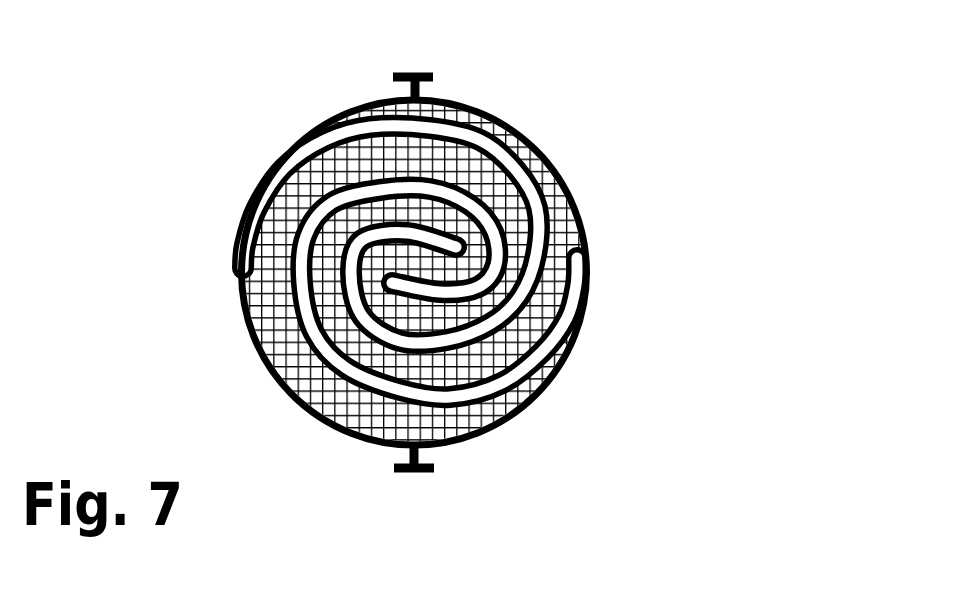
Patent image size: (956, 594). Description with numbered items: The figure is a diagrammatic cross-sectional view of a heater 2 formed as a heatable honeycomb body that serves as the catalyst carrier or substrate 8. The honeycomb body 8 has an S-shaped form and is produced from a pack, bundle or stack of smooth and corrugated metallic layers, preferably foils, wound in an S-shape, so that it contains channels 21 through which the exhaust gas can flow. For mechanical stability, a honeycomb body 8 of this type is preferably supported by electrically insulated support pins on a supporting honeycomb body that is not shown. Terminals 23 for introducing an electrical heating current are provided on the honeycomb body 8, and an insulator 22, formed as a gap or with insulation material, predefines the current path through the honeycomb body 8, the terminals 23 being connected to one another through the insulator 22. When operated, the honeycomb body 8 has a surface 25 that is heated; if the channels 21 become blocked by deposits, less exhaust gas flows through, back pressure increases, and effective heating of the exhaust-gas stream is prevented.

The heater 2 is at (217, 138).
The honeycomb body 8 is at (565, 237).
The channels 21 is at (568, 212).
The insulator 22 is at (446, 178).
The terminals 23 is at (417, 73).
The surface 25 is at (256, 296).